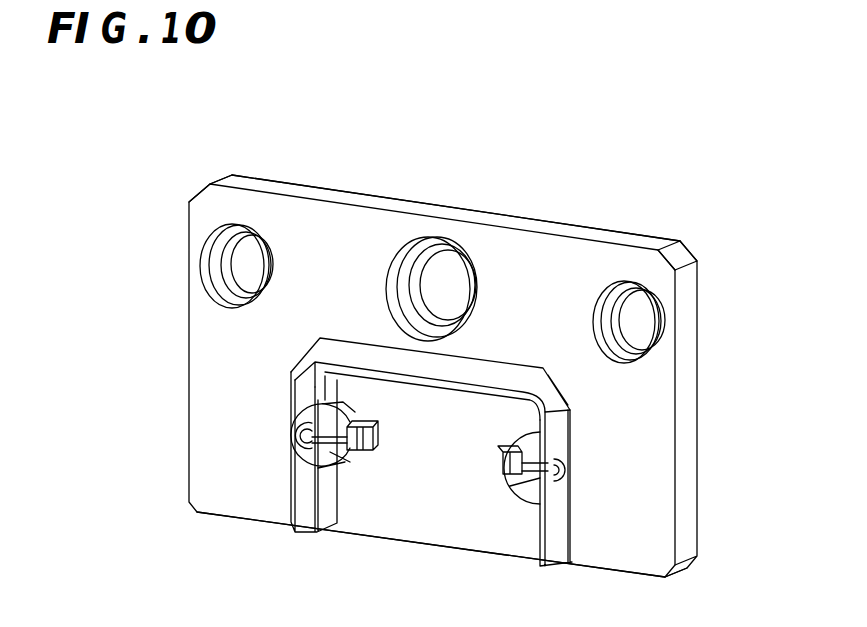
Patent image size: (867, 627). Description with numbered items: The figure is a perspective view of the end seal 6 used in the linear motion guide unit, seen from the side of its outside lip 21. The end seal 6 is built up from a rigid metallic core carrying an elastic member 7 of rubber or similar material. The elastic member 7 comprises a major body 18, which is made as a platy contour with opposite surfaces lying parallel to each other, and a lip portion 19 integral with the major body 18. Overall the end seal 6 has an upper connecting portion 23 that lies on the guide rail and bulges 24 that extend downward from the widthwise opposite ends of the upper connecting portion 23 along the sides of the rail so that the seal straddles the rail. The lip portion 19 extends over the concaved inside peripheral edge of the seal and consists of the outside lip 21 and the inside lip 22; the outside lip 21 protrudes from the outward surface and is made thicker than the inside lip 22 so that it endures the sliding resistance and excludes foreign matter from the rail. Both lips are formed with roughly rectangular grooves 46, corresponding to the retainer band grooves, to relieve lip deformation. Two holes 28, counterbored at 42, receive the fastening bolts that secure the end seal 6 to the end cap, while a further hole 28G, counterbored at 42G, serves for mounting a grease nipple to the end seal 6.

The end seal 6 is at (534, 201).
The elastic member 7 is at (217, 354).
The major body 18 is at (333, 243).
The upper connecting portion 23 is at (547, 275).
The bulges 24 is at (220, 438).
The holes 28 is at (253, 247).
The counterbore 42 is at (215, 263).
The grease nipple hole 28G is at (445, 268).
The counterbore of grease nipple hole 42G is at (410, 257).
The lip portion 19 is at (496, 394).
The outside lip 21 is at (300, 498).
The inside lip 22 is at (333, 487).
The grooves 46 is at (332, 437).